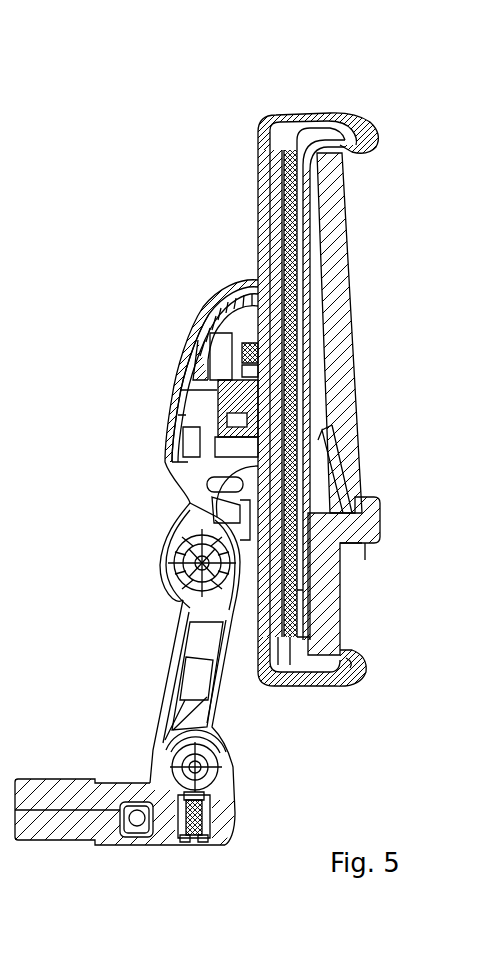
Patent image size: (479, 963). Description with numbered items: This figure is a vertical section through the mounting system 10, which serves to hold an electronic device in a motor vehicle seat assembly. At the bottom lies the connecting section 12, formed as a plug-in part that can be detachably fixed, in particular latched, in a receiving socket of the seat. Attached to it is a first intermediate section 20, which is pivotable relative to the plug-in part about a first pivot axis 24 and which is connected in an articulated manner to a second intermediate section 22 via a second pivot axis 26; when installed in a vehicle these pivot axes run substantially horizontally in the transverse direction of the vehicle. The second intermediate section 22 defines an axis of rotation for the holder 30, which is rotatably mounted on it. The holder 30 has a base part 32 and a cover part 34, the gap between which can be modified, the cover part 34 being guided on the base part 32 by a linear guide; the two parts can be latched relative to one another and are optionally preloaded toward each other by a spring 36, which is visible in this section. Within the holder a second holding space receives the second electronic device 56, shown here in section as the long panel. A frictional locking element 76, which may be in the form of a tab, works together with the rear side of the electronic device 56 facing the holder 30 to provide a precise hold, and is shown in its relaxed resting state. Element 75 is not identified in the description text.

The mounting system 10 is at (408, 97).
The connecting section 12 is at (228, 859).
The first intermediate section 20 is at (136, 686).
The second intermediate section 22 is at (165, 330).
The first pivot axis 24 is at (227, 762).
The second pivot axis 26 is at (176, 594).
The first holder 30 is at (229, 174).
The base part 32 is at (246, 668).
The cover part 34 is at (283, 99).
The spring 36 is at (220, 402).
The second electronic device 56 is at (340, 327).
The inner layer 75 is at (320, 247).
The frictional locking element 76 is at (353, 433).